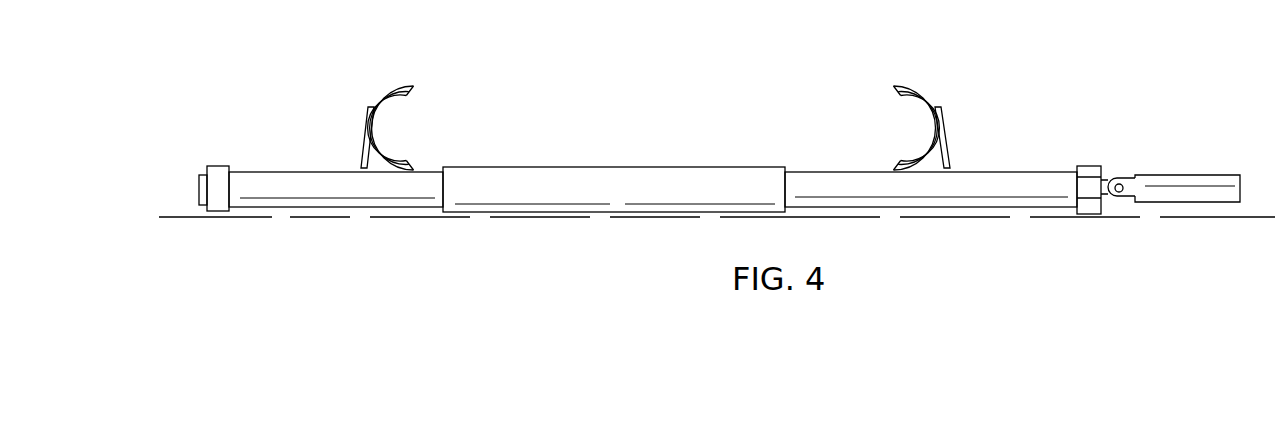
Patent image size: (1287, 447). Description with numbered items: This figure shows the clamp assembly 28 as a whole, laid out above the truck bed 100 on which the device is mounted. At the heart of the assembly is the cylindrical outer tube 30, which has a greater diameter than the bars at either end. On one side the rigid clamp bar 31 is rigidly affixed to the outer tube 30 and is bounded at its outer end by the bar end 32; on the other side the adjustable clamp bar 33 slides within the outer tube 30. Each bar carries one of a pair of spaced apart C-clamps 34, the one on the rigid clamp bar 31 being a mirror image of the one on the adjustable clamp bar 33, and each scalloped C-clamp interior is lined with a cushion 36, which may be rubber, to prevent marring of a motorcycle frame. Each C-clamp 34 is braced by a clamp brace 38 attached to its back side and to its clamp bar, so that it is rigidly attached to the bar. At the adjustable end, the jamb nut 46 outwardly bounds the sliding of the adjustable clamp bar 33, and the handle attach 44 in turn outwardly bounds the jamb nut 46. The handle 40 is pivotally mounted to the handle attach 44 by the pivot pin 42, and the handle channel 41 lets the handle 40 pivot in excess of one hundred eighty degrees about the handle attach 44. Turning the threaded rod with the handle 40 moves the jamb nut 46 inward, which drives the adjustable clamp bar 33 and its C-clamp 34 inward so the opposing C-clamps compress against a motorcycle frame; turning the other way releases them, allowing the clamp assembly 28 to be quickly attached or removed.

The clamp assembly 28 is at (540, 135).
The outer tube 30 is at (630, 167).
The rigid clamp bar 31 is at (302, 208).
The bar end 32 is at (215, 212).
The adjustable clamp bar 33 is at (935, 208).
The C-clamp 34 is at (388, 97).
The cushion 36 is at (382, 130).
The clamp brace 38 is at (367, 125).
The handle 40 is at (1185, 203).
The handle channel 41 is at (1140, 154).
The pivot pin 42 is at (1119, 194).
The handle attach 44 is at (1108, 177).
The jamb nut 46 is at (1088, 214).
The truck bed 100 is at (496, 232).